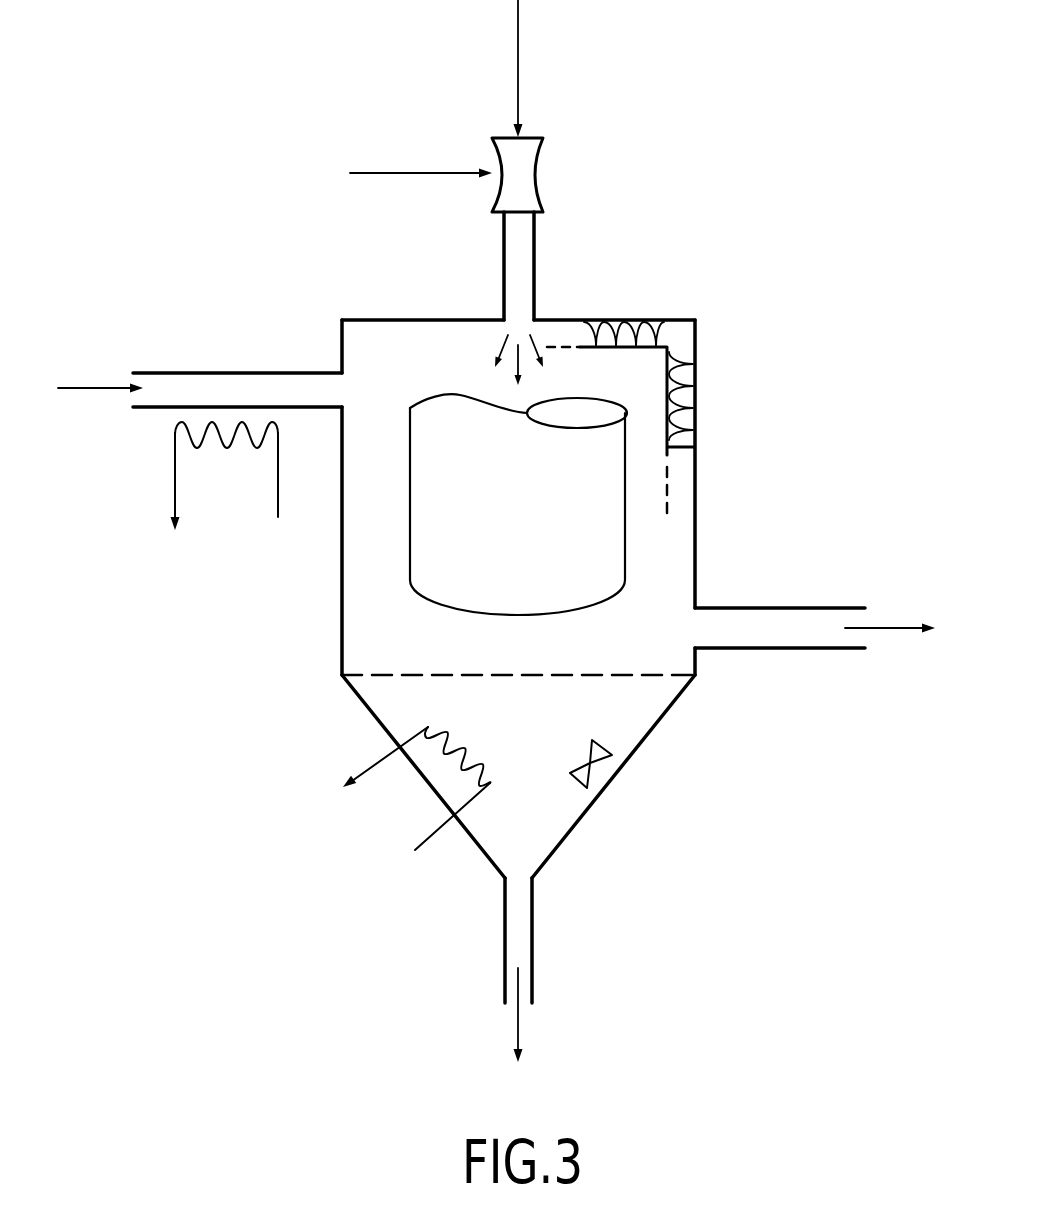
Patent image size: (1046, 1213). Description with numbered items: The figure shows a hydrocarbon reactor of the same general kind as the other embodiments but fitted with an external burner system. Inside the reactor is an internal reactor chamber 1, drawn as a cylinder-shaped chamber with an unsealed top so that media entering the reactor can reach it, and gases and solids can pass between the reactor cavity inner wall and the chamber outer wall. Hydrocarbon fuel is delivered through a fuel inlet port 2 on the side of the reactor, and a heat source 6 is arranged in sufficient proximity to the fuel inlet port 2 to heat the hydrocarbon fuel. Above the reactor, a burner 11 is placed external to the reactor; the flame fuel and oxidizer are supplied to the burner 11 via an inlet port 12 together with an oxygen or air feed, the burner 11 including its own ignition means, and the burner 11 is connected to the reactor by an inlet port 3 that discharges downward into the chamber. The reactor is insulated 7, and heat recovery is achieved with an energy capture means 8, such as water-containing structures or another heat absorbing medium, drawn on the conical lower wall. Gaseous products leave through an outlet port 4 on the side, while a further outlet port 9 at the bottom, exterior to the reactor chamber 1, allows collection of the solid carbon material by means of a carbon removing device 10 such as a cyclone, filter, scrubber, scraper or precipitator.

The reactor chamber 1 is at (592, 556).
The fuel inlet port 2 is at (167, 373).
The inlet port 3 is at (528, 279).
The outlet port 4 is at (812, 648).
The heat source 6 is at (238, 502).
The insulation 7 is at (696, 378).
The energy capture means 8 is at (415, 820).
The further outlet port 9 is at (534, 957).
The carbon removing device 10 is at (590, 763).
The burner 11 is at (537, 173).
The inlet port 12 is at (411, 172).